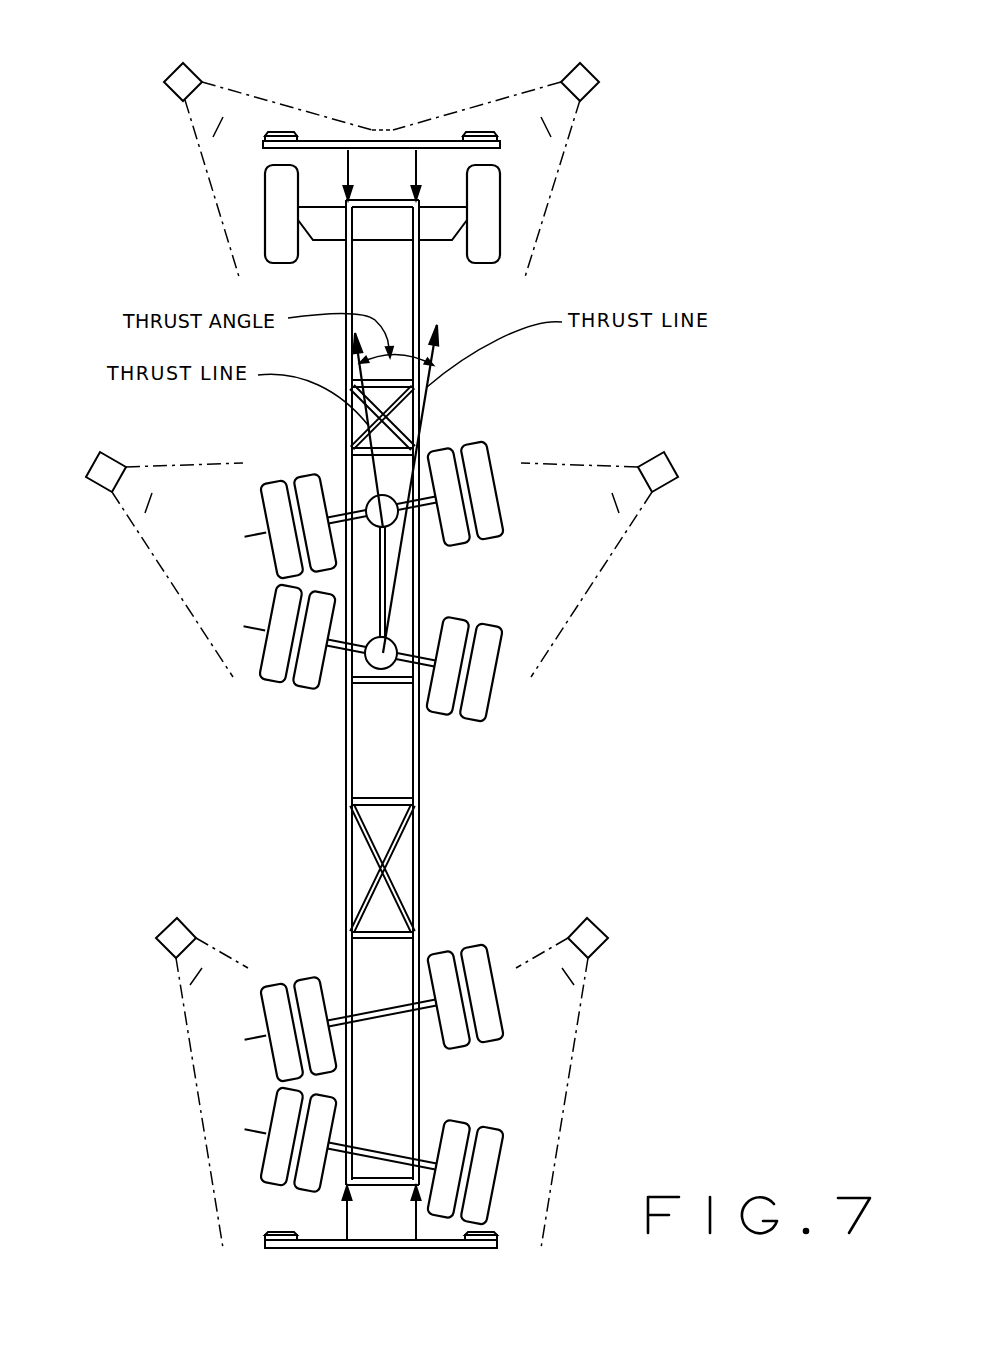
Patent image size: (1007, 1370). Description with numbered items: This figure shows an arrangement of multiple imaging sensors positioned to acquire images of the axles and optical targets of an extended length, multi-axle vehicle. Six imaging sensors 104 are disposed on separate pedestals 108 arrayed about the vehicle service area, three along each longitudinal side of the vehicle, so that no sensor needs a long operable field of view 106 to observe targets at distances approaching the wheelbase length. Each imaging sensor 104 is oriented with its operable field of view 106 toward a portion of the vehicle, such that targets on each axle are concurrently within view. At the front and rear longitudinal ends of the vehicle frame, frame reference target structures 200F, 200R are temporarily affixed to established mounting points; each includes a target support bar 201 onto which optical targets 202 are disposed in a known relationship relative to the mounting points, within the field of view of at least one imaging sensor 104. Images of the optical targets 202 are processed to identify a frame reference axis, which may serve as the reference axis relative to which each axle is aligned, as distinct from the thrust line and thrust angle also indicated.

The imaging sensor 104 is at (158, 103).
The operable field of view 106 is at (215, 128).
The pedestal 108 is at (176, 66).
The front frame reference target structure 200F is at (369, 124).
The rear frame reference target structure 200R is at (350, 1266).
The target support bar 201 is at (405, 137).
The optical target 202 is at (278, 132).